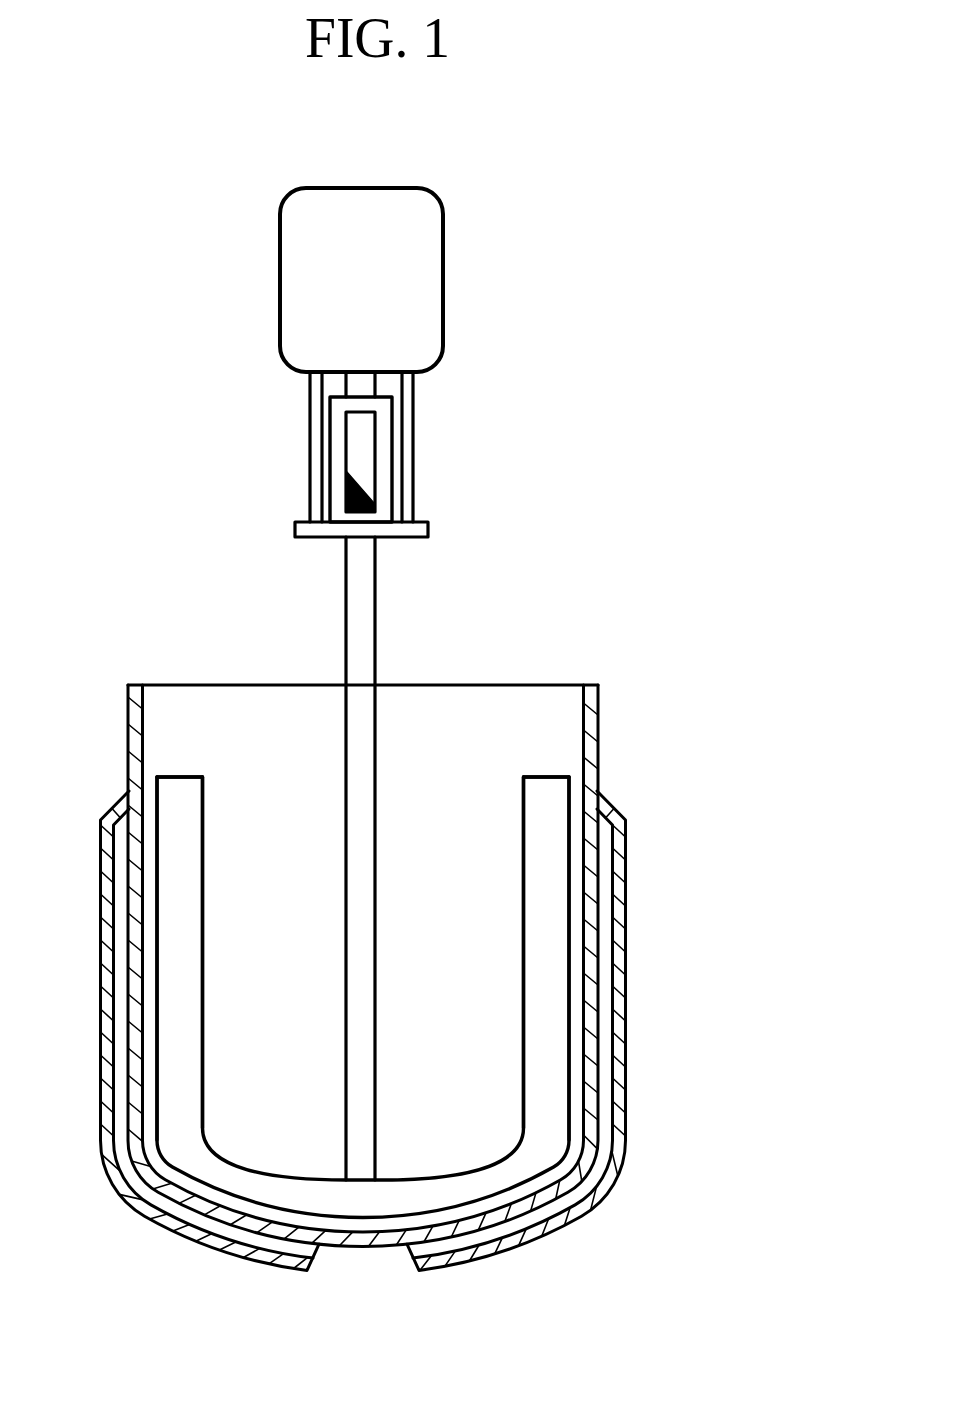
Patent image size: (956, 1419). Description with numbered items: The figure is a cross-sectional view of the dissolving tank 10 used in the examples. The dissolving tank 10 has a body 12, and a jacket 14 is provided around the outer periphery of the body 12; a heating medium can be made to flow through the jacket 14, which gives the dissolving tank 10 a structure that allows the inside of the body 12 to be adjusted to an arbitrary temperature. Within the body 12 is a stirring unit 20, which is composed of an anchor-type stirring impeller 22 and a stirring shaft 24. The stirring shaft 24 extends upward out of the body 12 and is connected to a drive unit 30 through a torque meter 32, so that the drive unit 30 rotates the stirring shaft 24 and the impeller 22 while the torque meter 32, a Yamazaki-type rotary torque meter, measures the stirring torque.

The dissolving tank 10 is at (745, 182).
The body 12 is at (592, 717).
The jacket 14 is at (618, 858).
The stirring unit 20 is at (303, 1013).
The anchor-type stirring impeller 22 is at (183, 1097).
The stirring shaft 24 is at (355, 1098).
The drive unit 30 is at (420, 303).
The torque meter 32 is at (385, 455).